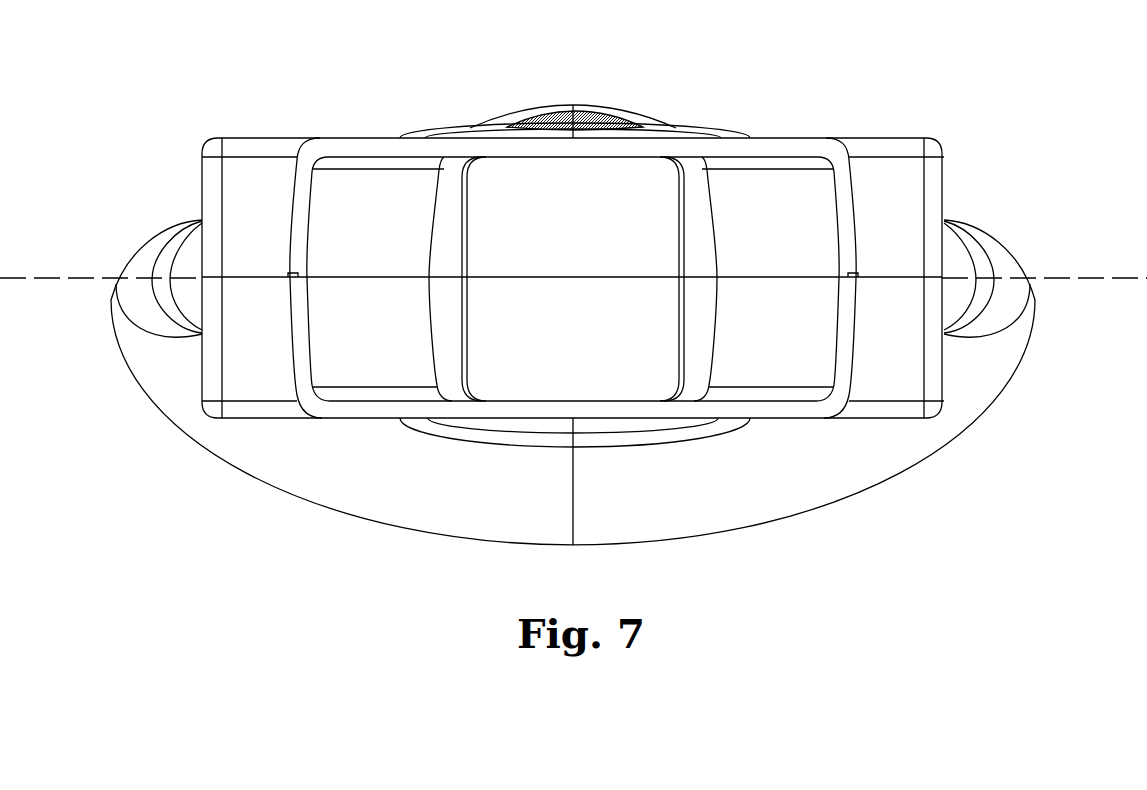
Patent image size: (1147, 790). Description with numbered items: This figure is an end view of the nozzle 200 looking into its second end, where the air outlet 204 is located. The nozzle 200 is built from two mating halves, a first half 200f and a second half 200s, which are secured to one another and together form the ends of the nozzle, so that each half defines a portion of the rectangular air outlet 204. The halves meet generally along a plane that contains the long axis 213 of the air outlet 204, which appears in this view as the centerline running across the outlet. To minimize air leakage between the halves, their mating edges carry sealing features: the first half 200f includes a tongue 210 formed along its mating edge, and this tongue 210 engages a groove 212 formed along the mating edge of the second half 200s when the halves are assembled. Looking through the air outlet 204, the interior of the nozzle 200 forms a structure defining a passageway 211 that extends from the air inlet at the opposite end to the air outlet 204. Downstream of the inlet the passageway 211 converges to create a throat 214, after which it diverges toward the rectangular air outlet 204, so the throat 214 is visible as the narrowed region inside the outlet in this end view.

The nozzle 200 is at (262, 124).
The second half 200s is at (202, 167).
The first half 200f is at (202, 380).
The air outlet 204 is at (356, 368).
The tongue 210 is at (306, 272).
The passageway 211 is at (614, 176).
The groove 212 is at (292, 276).
The long axis 213 is at (1137, 278).
The throat 214 is at (465, 198).